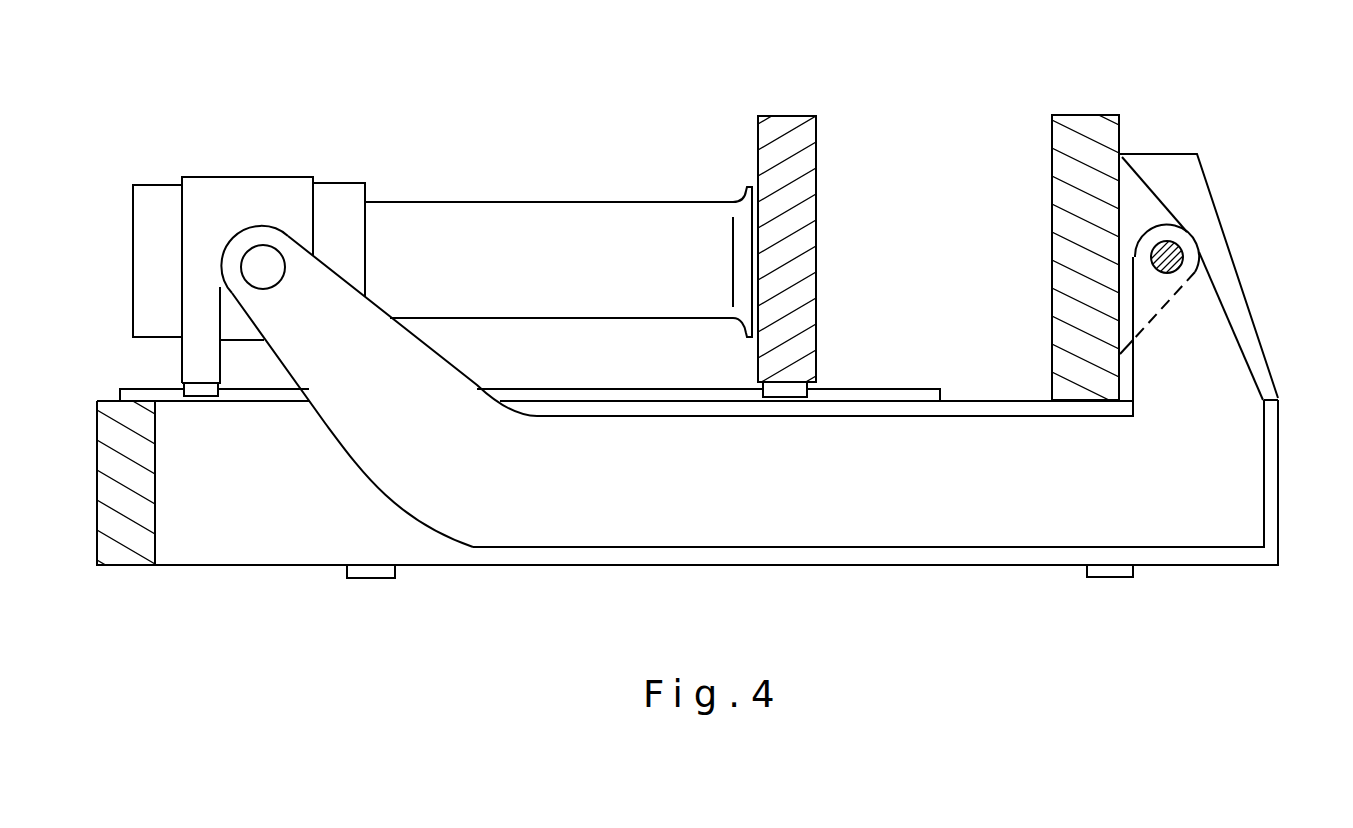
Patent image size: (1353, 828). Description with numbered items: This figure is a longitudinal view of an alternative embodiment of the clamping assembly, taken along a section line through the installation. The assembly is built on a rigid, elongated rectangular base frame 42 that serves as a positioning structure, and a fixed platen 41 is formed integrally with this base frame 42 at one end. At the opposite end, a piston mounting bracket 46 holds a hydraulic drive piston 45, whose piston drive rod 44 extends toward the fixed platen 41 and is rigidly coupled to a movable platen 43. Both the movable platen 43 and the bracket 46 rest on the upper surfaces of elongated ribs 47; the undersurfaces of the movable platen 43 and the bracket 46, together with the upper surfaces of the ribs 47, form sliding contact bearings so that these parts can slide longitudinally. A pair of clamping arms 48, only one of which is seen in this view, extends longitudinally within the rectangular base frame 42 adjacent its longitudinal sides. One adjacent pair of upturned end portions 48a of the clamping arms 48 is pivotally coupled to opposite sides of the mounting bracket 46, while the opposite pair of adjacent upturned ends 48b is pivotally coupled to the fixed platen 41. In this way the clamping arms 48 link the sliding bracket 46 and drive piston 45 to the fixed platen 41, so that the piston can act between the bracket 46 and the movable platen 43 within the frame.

The fixed platen 41 is at (1070, 113).
The rigid elongated rectangular base frame 42 is at (267, 530).
The movable platen 43 is at (777, 115).
The piston drive rod 44 is at (547, 200).
The hydraulic drive piston 45 is at (336, 183).
The piston mounting bracket 46 is at (222, 176).
The elongated ribs 47 is at (882, 386).
The clamping arms 48 is at (782, 379).
The upturned end portions 48a is at (362, 427).
The upturned ends 48b is at (1212, 350).